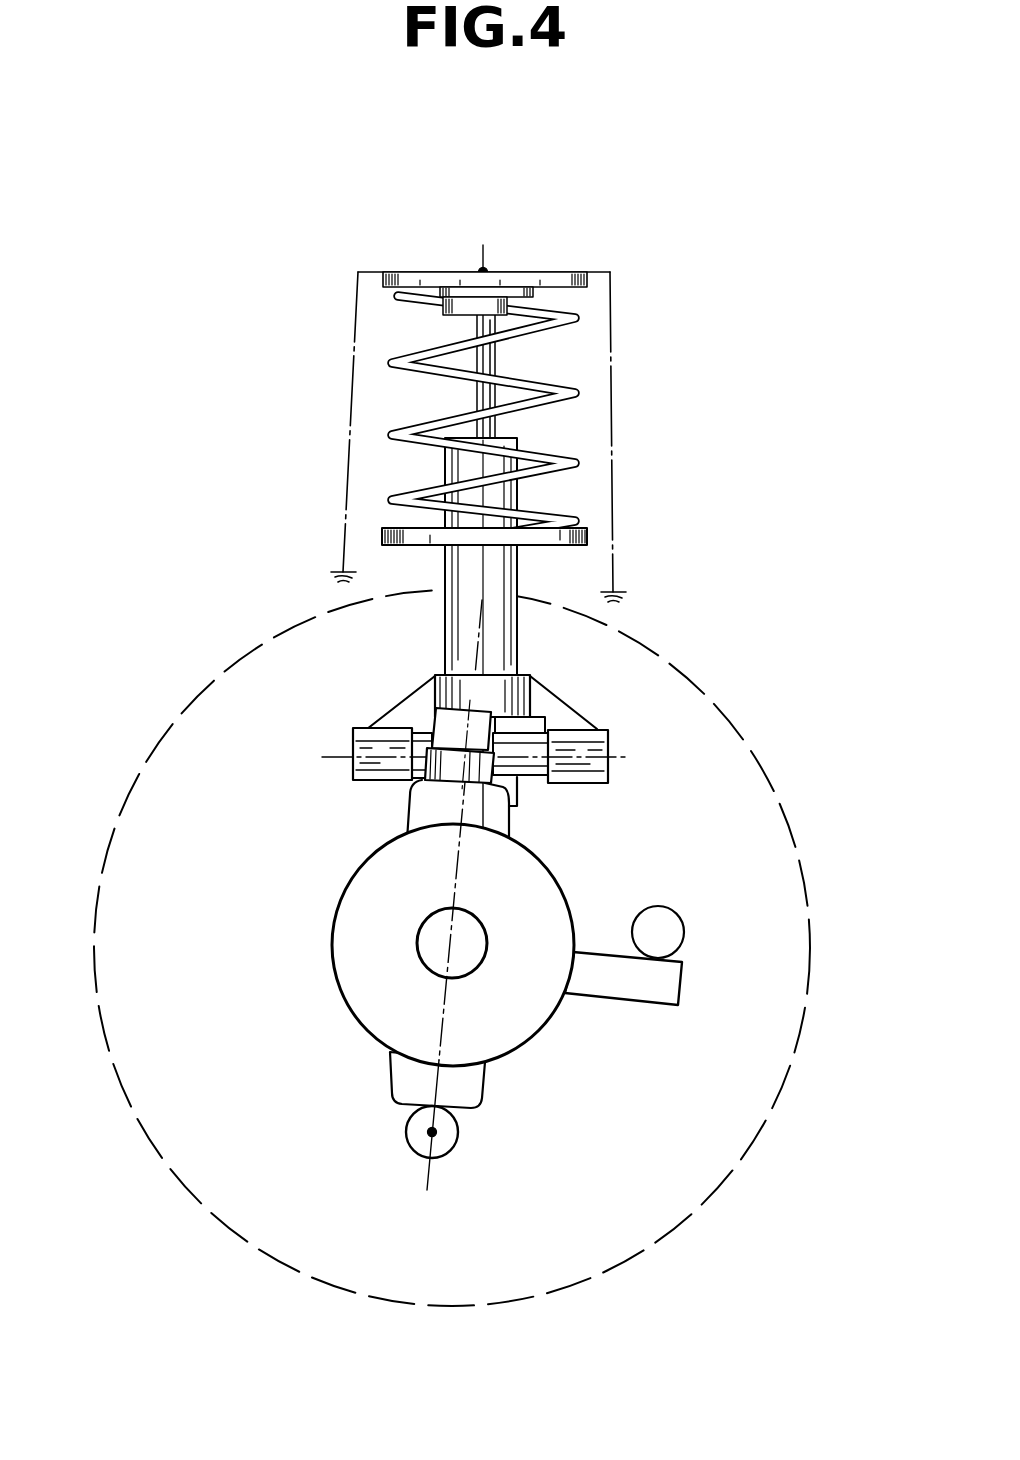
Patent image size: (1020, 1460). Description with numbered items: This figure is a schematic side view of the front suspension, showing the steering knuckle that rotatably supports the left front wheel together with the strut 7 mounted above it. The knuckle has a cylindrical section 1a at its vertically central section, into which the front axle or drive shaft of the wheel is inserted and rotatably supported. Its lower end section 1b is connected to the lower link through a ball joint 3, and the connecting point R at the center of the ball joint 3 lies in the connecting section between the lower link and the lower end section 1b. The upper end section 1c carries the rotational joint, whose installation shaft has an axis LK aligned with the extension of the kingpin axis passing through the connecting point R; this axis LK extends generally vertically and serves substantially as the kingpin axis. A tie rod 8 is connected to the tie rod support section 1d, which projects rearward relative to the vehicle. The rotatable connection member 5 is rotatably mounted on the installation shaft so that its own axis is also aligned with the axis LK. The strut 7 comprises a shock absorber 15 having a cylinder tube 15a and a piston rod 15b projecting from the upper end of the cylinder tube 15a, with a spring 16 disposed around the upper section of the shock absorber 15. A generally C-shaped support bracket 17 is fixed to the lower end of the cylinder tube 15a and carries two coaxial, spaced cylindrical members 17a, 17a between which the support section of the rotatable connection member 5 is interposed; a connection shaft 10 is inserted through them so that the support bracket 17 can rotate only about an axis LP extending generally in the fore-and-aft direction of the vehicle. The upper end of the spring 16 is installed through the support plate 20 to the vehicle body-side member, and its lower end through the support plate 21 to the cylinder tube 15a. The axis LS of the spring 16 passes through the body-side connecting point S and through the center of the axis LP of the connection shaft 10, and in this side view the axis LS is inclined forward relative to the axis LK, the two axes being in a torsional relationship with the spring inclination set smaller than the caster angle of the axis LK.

The cylindrical section 1a is at (428, 945).
The lower end section 1b is at (472, 1083).
The upper end section 1c is at (515, 818).
The tie rod support section 1d is at (636, 991).
The ball joint 3 is at (447, 1156).
The rotatable connection member 5 is at (422, 714).
The strut 7 is at (648, 377).
The tie rod 8 is at (668, 926).
The connection shaft 10 is at (527, 781).
The shock absorber 15 is at (604, 418).
The cylinder tube 15a is at (590, 500).
The piston rod 15b is at (590, 384).
The spring 16 is at (420, 368).
The support bracket 17 is at (528, 686).
The cylindrical members 17a is at (360, 728).
The support plate 20 is at (590, 291).
The support plate 21 is at (590, 563).
The connecting point S is at (483, 272).
The axis of the spring LS is at (470, 614).
The axis of the connection shaft LP is at (616, 763).
The axis of the installation shaft LK is at (460, 1103).
The connecting point R is at (430, 1134).